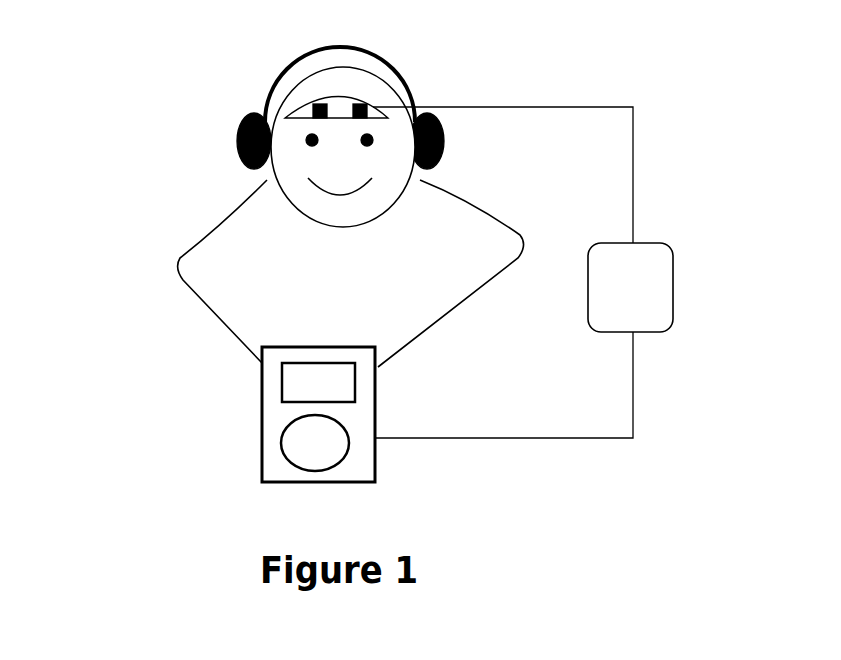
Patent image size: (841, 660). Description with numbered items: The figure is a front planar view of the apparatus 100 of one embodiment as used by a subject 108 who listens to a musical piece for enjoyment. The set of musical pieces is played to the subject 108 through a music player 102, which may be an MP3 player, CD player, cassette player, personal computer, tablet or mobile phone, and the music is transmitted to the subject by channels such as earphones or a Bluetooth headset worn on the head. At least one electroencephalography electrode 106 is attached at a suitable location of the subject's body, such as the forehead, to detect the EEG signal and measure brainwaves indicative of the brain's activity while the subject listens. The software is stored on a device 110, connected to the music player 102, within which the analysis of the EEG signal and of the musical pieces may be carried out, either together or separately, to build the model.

The system 100 is at (125, 560).
The music player 102 is at (262, 440).
The EEG electrode 106 is at (327, 117).
The subject 108 is at (397, 137).
The device 110 is at (672, 303).